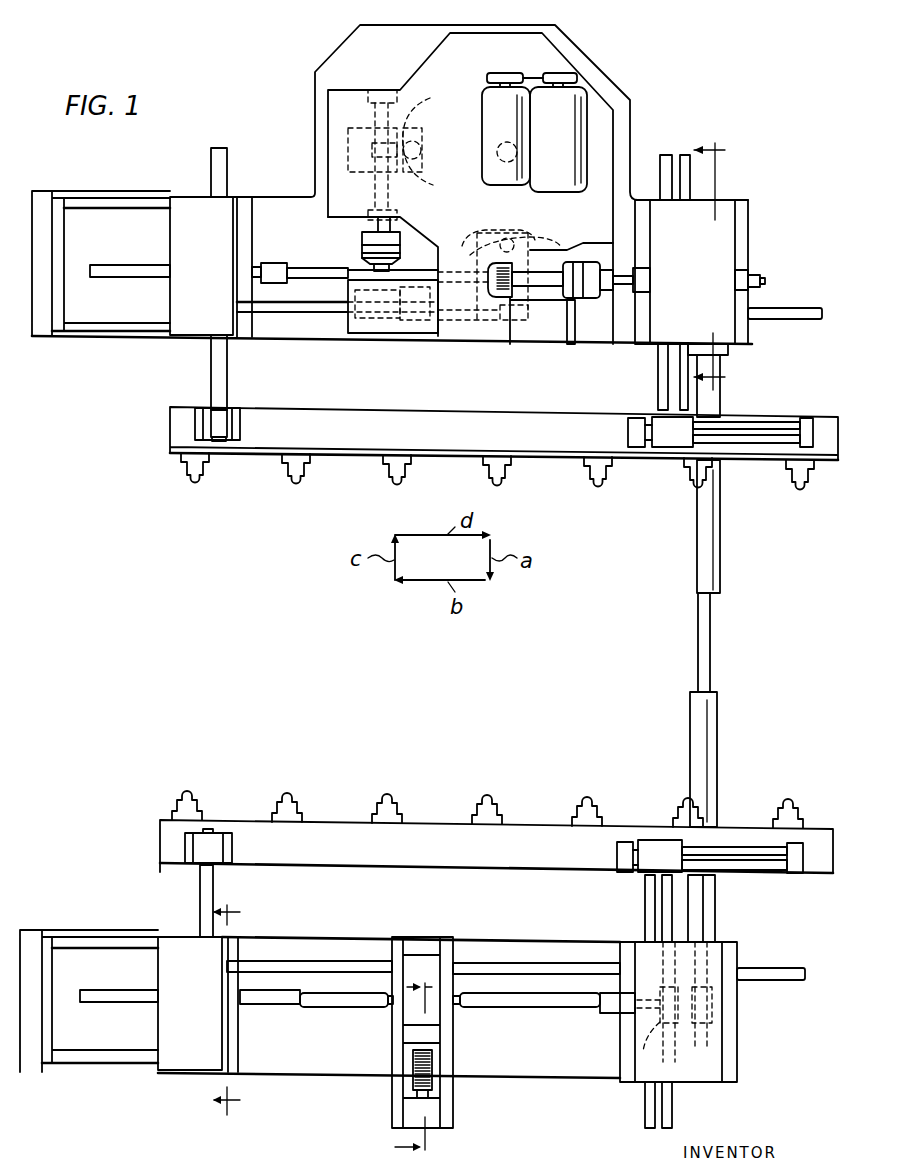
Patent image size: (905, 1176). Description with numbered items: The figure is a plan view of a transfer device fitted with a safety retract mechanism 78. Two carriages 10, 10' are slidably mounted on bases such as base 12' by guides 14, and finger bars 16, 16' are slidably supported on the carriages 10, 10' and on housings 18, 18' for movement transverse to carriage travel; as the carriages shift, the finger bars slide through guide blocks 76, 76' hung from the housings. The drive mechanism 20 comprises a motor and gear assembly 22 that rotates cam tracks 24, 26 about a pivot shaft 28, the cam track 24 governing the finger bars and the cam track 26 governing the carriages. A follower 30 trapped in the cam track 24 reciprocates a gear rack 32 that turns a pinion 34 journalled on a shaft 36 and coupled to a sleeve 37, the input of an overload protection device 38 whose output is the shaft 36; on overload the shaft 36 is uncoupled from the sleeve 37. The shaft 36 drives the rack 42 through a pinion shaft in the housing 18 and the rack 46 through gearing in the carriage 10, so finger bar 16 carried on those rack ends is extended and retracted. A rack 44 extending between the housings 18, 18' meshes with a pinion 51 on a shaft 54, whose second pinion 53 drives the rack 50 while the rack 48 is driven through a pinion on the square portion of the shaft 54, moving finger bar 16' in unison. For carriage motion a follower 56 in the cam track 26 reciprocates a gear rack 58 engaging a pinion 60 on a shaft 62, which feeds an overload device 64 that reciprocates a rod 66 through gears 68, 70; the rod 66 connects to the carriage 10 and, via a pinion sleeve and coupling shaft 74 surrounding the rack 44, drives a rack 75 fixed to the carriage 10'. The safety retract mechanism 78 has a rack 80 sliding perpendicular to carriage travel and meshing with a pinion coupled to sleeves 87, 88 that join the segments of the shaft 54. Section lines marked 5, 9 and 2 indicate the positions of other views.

The carriage 10 is at (292, 264).
The carriage 10' is at (386, 977).
The base 12' is at (392, 707).
The guides 14 is at (143, 205).
The finger bar 16 is at (504, 461).
The finger bar 16' is at (496, 818).
The housing 18 is at (727, 272).
The housing 18' is at (712, 1029).
The drive mechanism 20 is at (542, 62).
The motor and gear assembly 22 is at (517, 128).
The cam track 24 is at (473, 237).
The cam track 26 is at (423, 150).
The pivot shaft 28 is at (518, 153).
The follower 30 is at (528, 224).
The gear rack 32 is at (487, 325).
The pinion 34 is at (512, 300).
The shaft 36 is at (334, 288).
The sleeve 37 is at (547, 280).
The overload protection device 38 is at (585, 300).
The rack 42 is at (684, 158).
The rack 44 is at (712, 646).
The rack 46 is at (224, 373).
The rack 48 is at (215, 893).
The rack 50 is at (670, 900).
The pinion 51 is at (712, 1016).
The second pinion 53 is at (650, 1046).
The shaft 54 is at (128, 1000).
The follower 56 is at (418, 174).
The gear rack 58 is at (348, 128).
The pinion 60 is at (415, 108).
The shaft 62 is at (377, 190).
The overload device 64 is at (362, 247).
The rod 66 is at (303, 310).
The gear 68 is at (385, 320).
The gear 70 is at (405, 322).
The coupling shaft 74 is at (712, 558).
The rack 75 is at (510, 970).
The guide block 76 is at (720, 475).
The guide block 76' is at (710, 782).
The safety retract mechanism 78 is at (460, 1097).
The rack 80 is at (410, 1085).
The sleeve 87 is at (305, 1005).
The sleeve 88 is at (520, 1006).
The section line 5- 5 is at (718, 266).
The section line 9- 9 is at (234, 1009).
The section line 2- 2 is at (413, 1067).